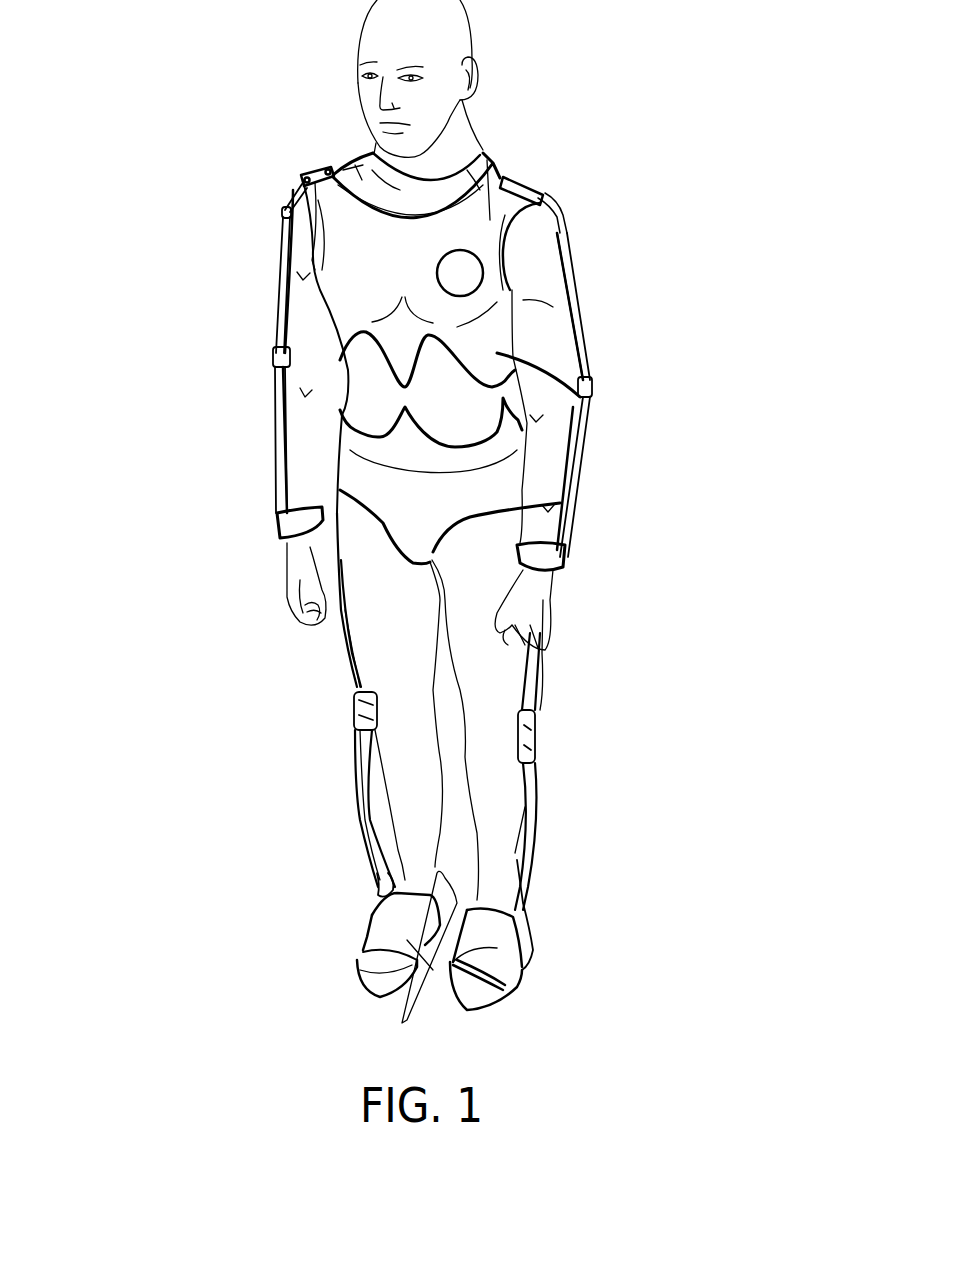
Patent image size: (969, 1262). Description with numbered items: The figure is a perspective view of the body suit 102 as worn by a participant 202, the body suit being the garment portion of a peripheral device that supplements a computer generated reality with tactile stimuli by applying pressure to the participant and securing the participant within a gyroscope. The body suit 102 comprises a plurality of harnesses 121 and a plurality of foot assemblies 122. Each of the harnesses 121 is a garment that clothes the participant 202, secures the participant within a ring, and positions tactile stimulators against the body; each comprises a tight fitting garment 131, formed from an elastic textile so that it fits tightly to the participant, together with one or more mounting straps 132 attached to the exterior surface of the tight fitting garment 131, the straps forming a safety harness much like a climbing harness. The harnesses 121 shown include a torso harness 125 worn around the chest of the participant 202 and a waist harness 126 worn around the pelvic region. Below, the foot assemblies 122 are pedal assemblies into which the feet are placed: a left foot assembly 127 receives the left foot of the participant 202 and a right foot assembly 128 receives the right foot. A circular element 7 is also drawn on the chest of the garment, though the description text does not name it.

The body suit 102 is at (385, 533).
The participant 202 is at (467, 143).
The tight fitting garment 131 is at (487, 213).
The sensor module 7 is at (467, 252).
The plurality of harnesses 121 is at (503, 483).
The waist harness 126 is at (457, 508).
The torso harness 125 is at (337, 213).
The one or more mounting straps 132 is at (277, 295).
The right foot assembly 128 is at (365, 953).
The left foot assembly 127 is at (522, 970).
The plurality of foot assemblies 122 is at (412, 968).